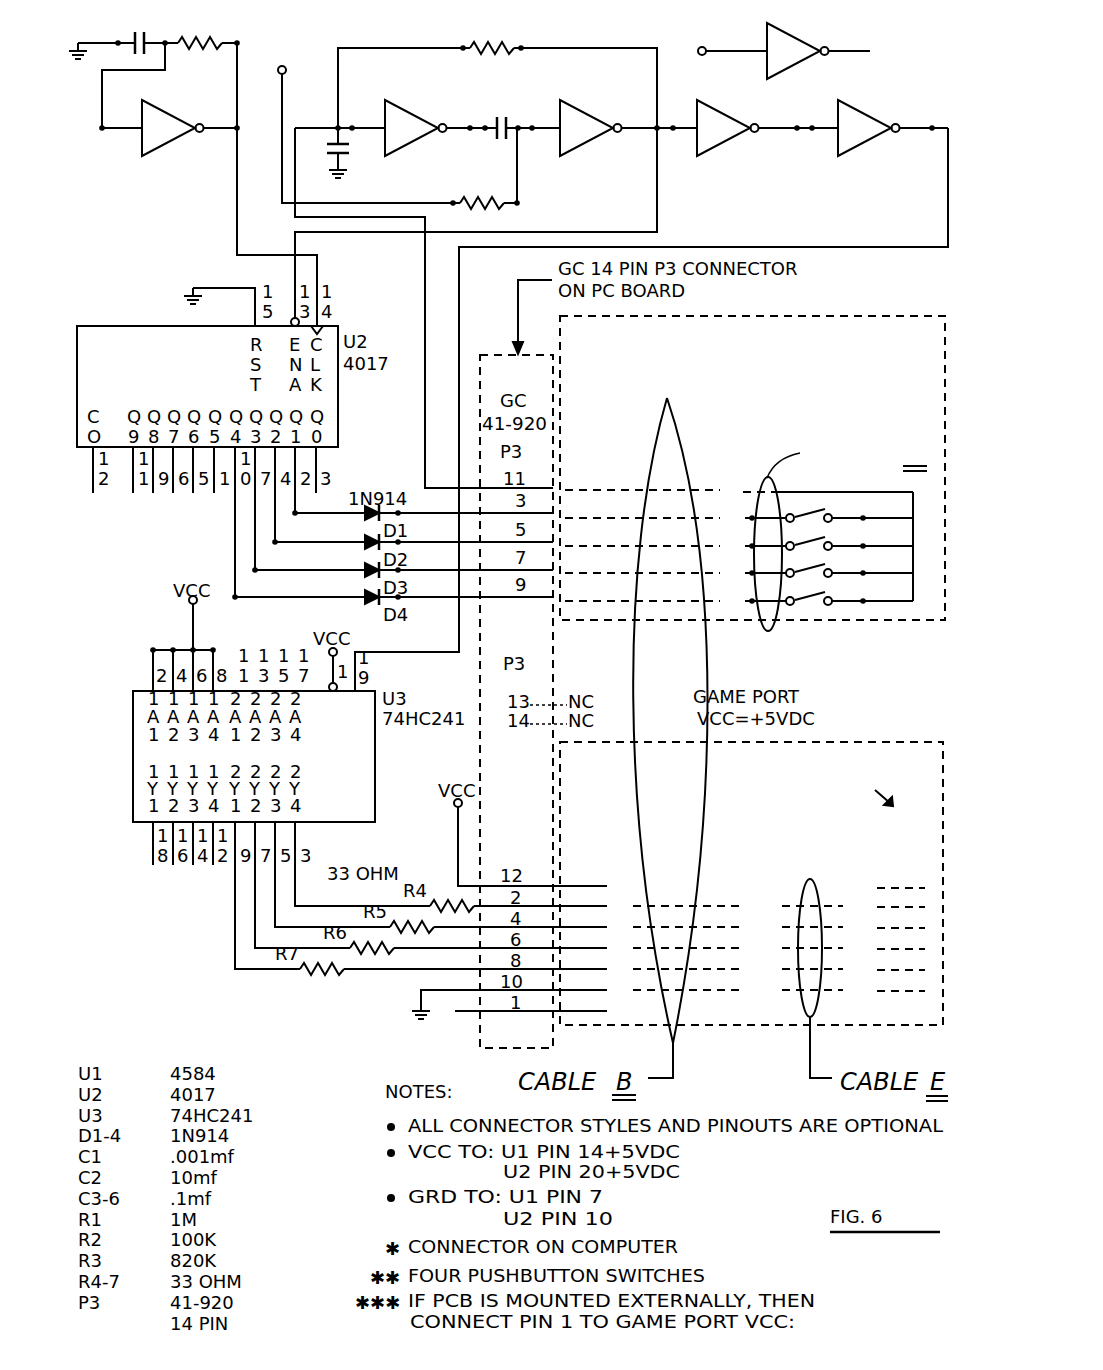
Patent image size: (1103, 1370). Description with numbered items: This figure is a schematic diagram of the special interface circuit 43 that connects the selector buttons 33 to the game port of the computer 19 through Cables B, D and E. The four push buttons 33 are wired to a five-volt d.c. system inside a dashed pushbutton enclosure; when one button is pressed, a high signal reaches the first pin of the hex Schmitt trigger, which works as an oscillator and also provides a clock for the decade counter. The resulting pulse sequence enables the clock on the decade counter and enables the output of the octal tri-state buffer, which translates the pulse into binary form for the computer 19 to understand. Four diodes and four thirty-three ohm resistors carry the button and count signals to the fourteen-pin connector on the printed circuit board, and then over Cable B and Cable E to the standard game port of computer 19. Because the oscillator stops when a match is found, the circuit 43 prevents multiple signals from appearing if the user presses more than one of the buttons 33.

The special interface circuit 43 is at (205, 193).
The selector buttons 33 is at (917, 563).
The computer 19 is at (930, 937).